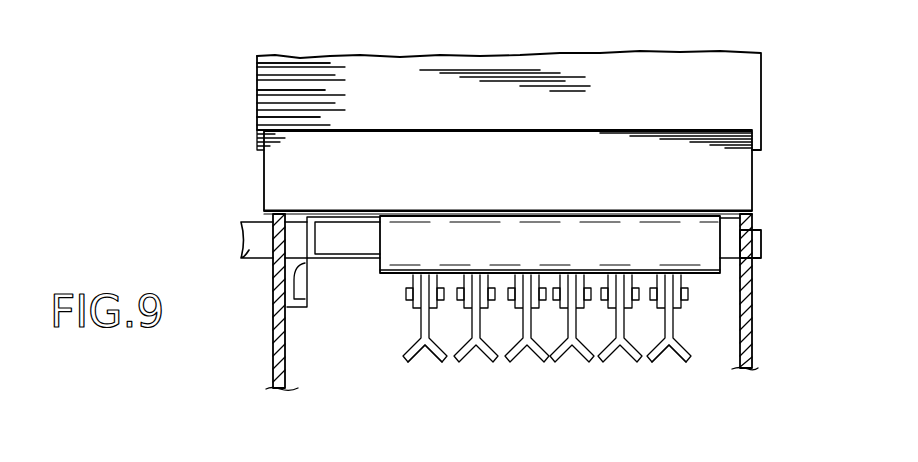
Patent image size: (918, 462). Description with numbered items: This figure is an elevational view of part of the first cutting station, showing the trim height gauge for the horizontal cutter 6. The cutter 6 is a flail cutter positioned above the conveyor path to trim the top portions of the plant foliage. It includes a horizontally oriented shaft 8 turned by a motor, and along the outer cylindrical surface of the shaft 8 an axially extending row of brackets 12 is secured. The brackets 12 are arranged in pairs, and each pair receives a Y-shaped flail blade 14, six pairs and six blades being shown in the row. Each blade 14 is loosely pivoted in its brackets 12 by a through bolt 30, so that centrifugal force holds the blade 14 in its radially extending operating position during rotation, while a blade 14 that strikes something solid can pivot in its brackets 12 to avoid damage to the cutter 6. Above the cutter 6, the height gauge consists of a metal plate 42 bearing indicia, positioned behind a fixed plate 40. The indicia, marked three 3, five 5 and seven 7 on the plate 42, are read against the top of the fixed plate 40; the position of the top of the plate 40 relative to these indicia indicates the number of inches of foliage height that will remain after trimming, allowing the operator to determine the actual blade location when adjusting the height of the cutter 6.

The first layer of wooden member 3 is at (309, 66).
The second layer of wooden member 5 is at (309, 91).
The third layer of wooden member 7 is at (309, 118).
The metal plate 42 is at (735, 72).
The fixed plate 40 is at (546, 182).
The first cutting device 6 is at (771, 214).
The shaft 8 is at (559, 254).
The brackets 12 is at (413, 308).
The Y-shaped flail blade 14 is at (418, 357).
The through bolts 30 is at (406, 294).